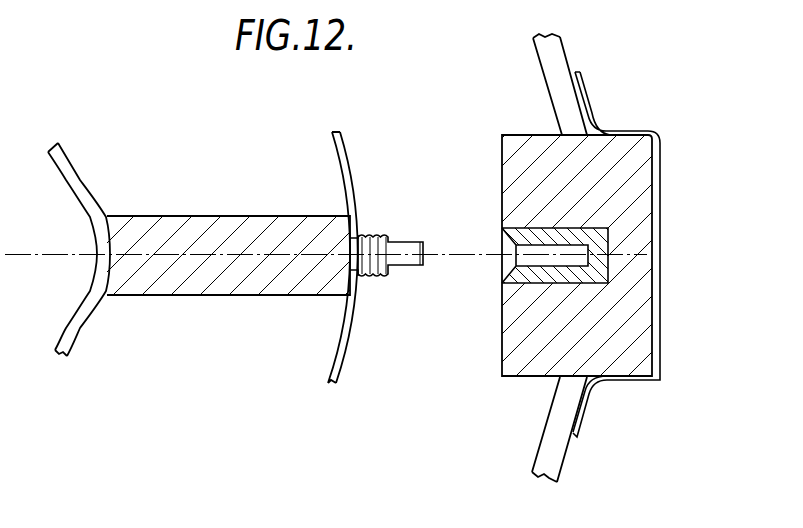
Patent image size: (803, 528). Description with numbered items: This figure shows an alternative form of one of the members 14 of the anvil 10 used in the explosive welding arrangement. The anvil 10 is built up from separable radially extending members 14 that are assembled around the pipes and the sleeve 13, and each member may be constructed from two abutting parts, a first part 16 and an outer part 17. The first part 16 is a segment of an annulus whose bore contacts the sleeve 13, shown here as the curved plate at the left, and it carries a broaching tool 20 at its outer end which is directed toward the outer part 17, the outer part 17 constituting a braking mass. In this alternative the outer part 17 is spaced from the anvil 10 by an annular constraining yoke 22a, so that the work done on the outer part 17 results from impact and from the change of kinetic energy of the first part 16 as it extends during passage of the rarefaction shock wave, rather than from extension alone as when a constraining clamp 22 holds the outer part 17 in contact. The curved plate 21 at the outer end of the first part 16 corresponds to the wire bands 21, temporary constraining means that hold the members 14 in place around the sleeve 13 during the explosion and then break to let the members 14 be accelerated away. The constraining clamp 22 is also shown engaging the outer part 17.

The anvil 10 is at (265, 226).
The sleeve 13 is at (70, 164).
The radially extending members 14 is at (560, 258).
The first part 16 is at (268, 226).
The outer part 17 is at (550, 182).
The broaching tool 20 is at (371, 235).
The wire bands 21 is at (341, 357).
The constraining clamp 22 is at (553, 449).
The annular constraining yoke 22a is at (593, 112).